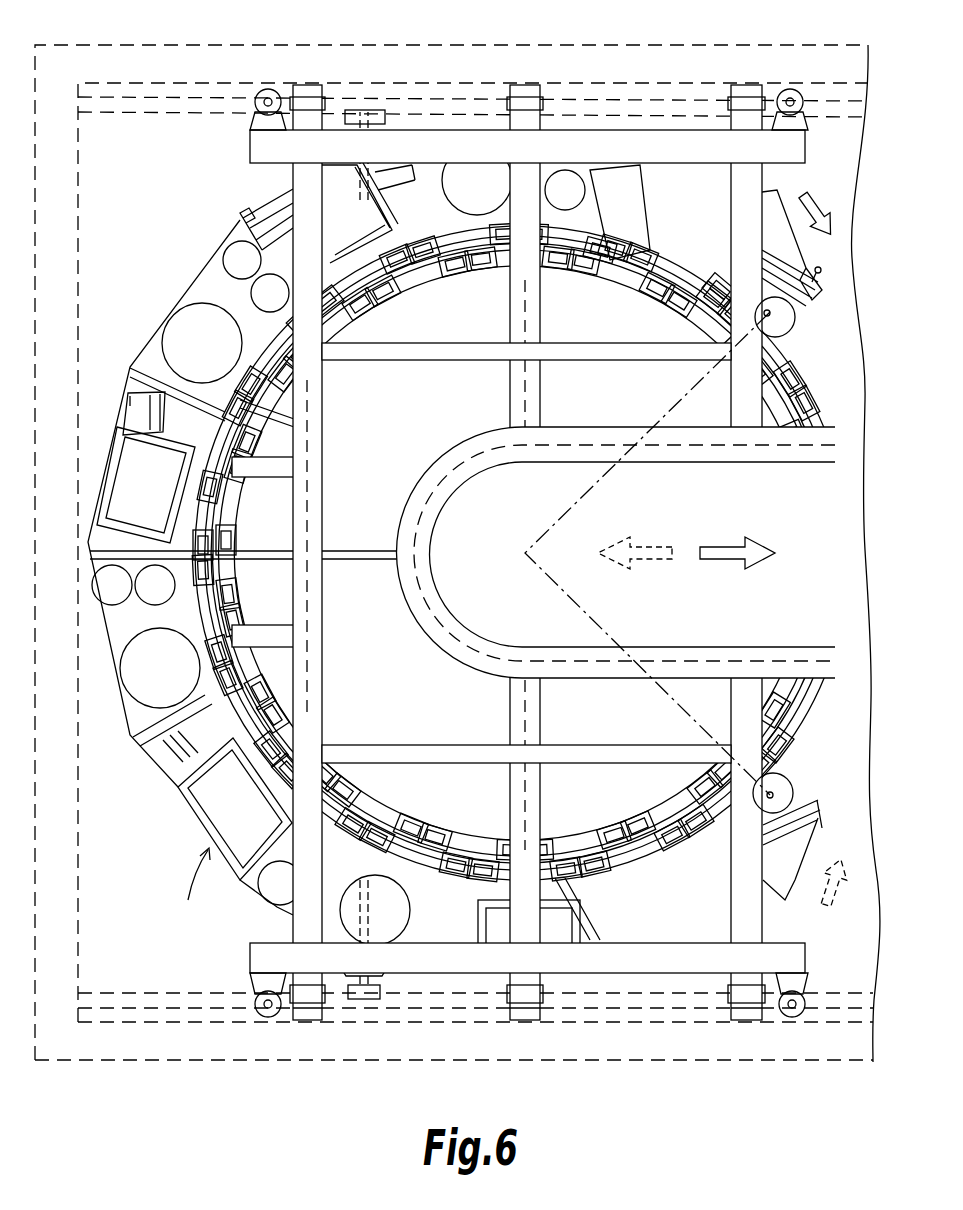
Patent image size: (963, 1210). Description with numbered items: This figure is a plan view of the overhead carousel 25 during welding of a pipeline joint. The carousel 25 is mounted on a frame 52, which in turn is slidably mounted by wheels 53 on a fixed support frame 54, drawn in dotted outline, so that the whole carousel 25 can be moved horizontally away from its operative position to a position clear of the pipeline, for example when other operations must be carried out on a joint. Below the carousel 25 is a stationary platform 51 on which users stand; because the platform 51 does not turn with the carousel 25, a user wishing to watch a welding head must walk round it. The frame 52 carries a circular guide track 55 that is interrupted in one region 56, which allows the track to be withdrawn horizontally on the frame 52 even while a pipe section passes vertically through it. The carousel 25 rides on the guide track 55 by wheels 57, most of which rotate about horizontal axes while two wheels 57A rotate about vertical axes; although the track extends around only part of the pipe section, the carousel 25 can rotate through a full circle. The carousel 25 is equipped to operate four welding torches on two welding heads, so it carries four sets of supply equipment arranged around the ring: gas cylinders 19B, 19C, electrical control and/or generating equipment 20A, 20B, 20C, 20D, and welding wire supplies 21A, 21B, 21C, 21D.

The fixed support frame 54 is at (160, 100).
The platform 51 is at (508, 552).
The frame 52 is at (750, 692).
The wheels 53 is at (268, 1018).
The circular guide track 55 is at (795, 404).
The interrupted region 56 is at (783, 537).
The wheels 57 is at (600, 248).
The wheels rotating about vertical axes 57A is at (782, 322).
The electrical control and/or generating equipment 20A is at (282, 200).
The electrical control and/or generating equipment 20B is at (146, 467).
The electrical control and/or generating equipment 20C is at (205, 805).
The electrical control and/or generating equipment 20D is at (580, 925).
The welding wire supply 21A is at (455, 185).
The welding wire supply 21B is at (202, 345).
The welding wire supply 21C is at (140, 690).
The welding wire supply 21D is at (398, 920).
The gas cylinders 19B is at (270, 295).
The gas cylinders 19C is at (158, 583).
The overhead carousel 25 is at (192, 888).